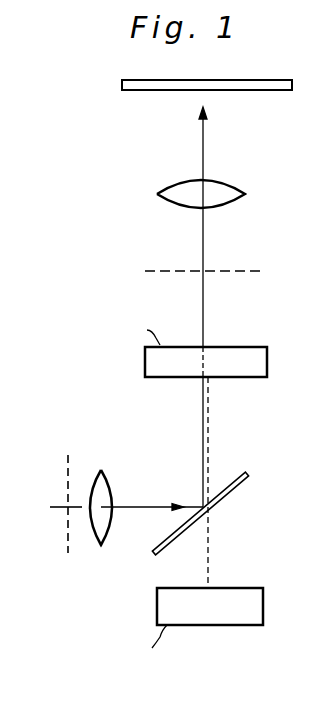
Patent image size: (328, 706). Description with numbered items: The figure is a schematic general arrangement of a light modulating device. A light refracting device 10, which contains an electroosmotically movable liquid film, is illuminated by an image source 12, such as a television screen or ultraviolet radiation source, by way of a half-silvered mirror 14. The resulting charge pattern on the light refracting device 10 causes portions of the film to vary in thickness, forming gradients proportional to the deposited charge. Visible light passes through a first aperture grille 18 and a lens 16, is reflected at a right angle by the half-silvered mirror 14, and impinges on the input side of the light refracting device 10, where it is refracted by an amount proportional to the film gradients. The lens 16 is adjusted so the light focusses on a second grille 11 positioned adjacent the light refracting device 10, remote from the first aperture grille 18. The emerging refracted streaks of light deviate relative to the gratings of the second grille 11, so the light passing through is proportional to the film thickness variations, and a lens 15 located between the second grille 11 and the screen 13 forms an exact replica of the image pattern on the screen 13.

The light refracting device 10 is at (247, 347).
The second grille 11 is at (262, 271).
The image source 12 is at (263, 595).
The screen 13 is at (292, 85).
The half-silvered mirror 14 is at (243, 482).
The lens 15 is at (243, 190).
The lens 16 is at (105, 472).
The first aperture grille 18 is at (66, 455).